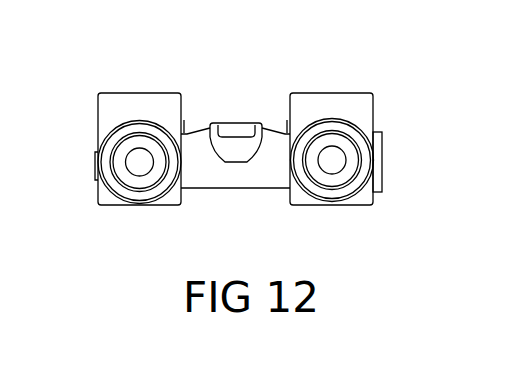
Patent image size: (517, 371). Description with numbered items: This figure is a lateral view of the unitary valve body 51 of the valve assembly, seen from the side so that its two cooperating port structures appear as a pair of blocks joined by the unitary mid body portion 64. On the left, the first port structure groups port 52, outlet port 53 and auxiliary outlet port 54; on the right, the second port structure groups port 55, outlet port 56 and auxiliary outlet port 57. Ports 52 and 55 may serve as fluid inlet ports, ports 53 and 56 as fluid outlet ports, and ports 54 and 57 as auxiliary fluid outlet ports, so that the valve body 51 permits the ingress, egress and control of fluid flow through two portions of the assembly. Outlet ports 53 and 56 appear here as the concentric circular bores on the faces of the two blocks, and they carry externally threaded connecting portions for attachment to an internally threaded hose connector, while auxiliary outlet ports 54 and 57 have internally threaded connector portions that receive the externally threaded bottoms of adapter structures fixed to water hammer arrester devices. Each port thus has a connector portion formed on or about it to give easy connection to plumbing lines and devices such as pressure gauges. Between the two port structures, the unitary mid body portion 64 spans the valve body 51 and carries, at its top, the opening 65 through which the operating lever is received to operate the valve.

The valve body 51 is at (257, 93).
The port 52 is at (126, 212).
The outlet port 53 is at (123, 167).
The auxiliary outlet port 54 is at (122, 79).
The port 55 is at (336, 214).
The outlet port 56 is at (361, 156).
The auxiliary outlet port 57 is at (349, 85).
The unitary mid body portion 64 is at (233, 178).
The opening 65 is at (232, 130).